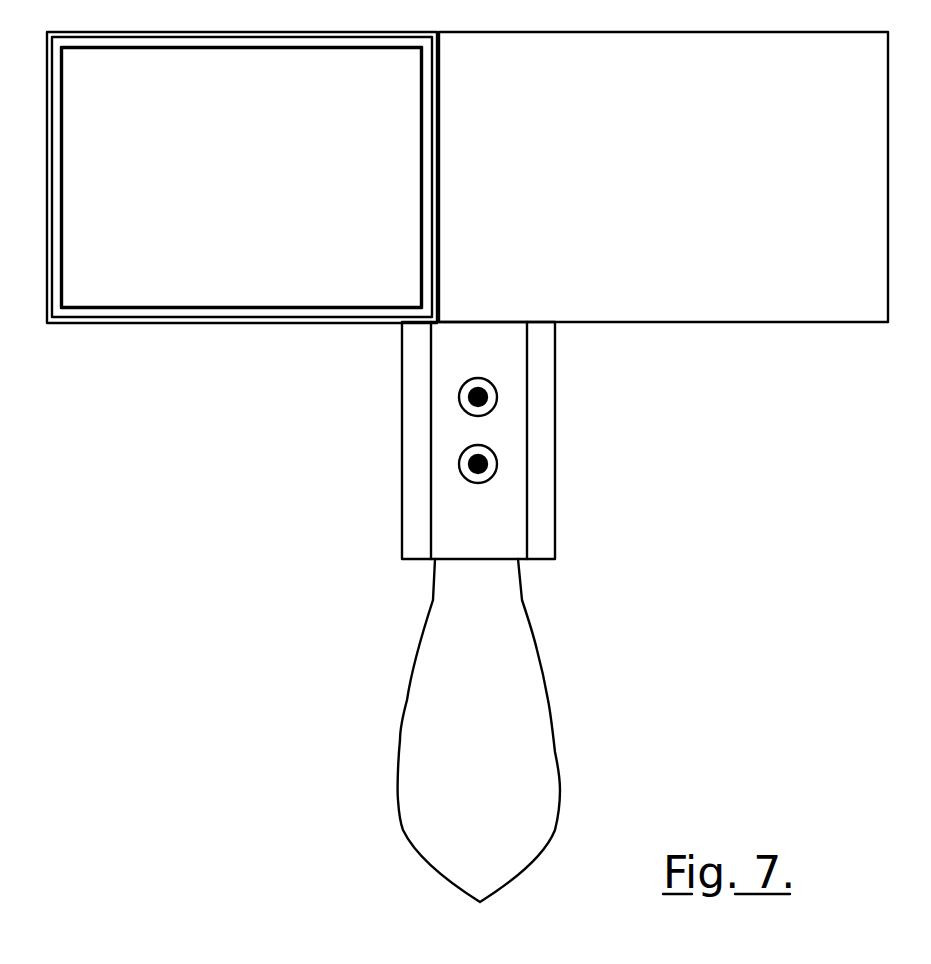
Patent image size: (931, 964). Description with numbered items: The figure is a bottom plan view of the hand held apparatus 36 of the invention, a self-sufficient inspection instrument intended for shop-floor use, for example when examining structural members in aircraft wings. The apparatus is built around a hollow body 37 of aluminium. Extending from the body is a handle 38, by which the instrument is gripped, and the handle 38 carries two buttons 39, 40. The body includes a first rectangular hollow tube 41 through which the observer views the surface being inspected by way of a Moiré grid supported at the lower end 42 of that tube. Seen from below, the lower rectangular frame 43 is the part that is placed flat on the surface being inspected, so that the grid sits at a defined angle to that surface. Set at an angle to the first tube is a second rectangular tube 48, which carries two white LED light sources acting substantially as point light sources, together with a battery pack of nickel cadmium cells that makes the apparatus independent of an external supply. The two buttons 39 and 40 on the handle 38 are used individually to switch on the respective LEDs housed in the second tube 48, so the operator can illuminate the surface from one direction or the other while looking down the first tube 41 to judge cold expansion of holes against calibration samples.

The hand held apparatus 36 is at (563, 548).
The hollow body 37 is at (303, 324).
The handle 38 is at (555, 752).
The button 39 is at (484, 402).
The button 40 is at (485, 470).
The first rectangular hollow tube 41 is at (207, 324).
The lower end 42 is at (118, 324).
The lower rectangular frame 43 is at (273, 324).
The second rectangular tube 48 is at (850, 323).